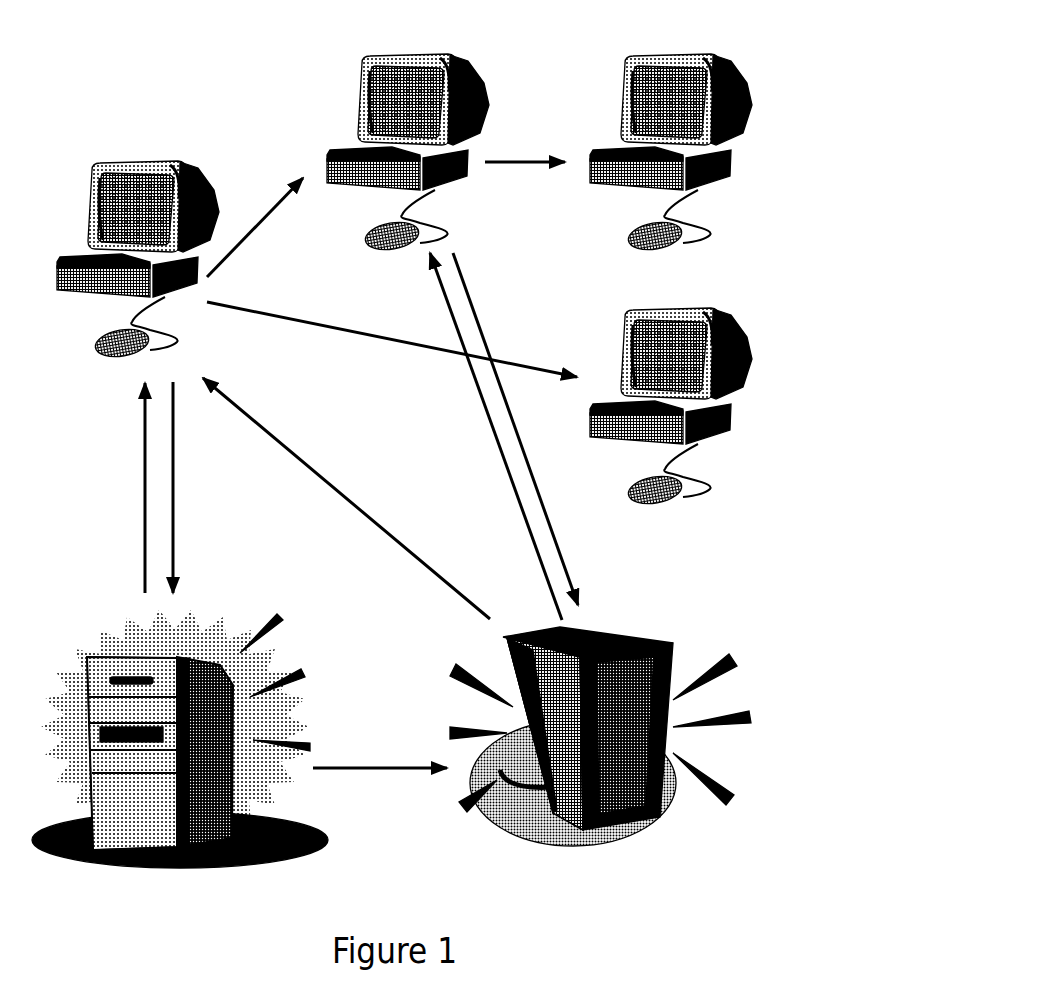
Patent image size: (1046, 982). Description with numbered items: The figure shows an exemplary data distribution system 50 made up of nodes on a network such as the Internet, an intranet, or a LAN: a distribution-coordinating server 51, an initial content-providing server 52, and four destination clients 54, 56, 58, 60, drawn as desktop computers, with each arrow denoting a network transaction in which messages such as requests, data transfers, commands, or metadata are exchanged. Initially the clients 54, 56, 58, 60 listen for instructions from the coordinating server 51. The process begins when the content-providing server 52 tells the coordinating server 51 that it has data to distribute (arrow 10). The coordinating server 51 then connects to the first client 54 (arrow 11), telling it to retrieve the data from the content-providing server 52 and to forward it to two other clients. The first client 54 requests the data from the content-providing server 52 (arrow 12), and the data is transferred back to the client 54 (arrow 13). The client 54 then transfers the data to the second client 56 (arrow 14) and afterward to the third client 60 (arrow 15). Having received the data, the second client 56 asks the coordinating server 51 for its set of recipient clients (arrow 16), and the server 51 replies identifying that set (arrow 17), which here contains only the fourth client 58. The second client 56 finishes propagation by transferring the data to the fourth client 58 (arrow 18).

The arrow 10 is at (355, 765).
The arrow 11 is at (367, 517).
The arrow 12 is at (178, 523).
The arrow 13 is at (147, 510).
The arrow 14 is at (278, 210).
The arrow 15 is at (356, 340).
The arrow 16 is at (475, 305).
The arrow 17 is at (447, 308).
The arrow 18 is at (512, 168).
The system 50 is at (761, 849).
The distribution-coordinating server 51 is at (596, 843).
The initial content-providing server 52 is at (197, 873).
The destination client 54 is at (173, 160).
The destination client 56 is at (446, 58).
The destination client 58 is at (719, 62).
The destination client 60 is at (722, 322).